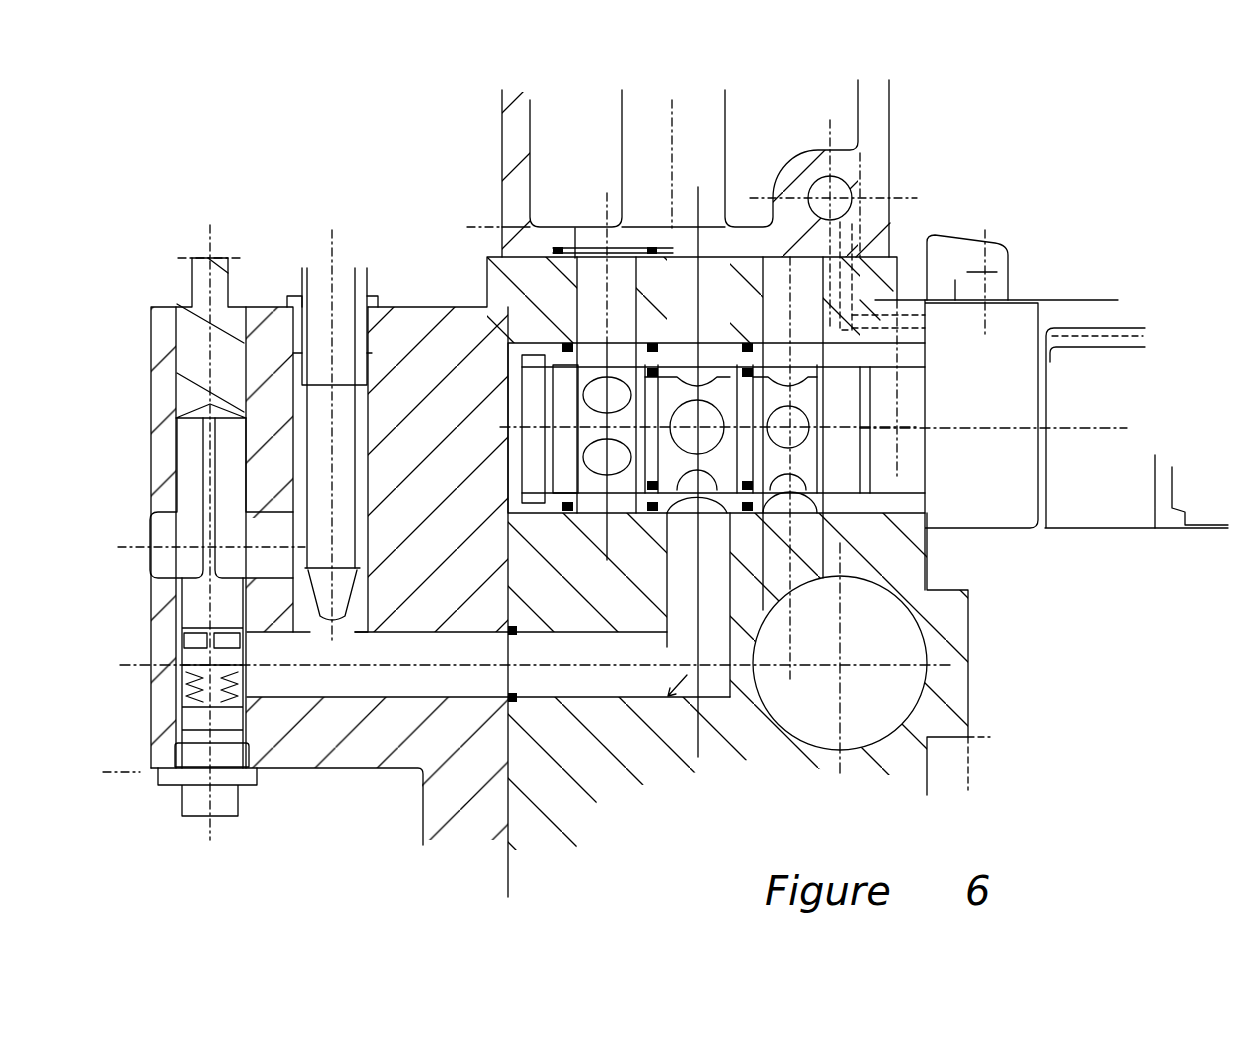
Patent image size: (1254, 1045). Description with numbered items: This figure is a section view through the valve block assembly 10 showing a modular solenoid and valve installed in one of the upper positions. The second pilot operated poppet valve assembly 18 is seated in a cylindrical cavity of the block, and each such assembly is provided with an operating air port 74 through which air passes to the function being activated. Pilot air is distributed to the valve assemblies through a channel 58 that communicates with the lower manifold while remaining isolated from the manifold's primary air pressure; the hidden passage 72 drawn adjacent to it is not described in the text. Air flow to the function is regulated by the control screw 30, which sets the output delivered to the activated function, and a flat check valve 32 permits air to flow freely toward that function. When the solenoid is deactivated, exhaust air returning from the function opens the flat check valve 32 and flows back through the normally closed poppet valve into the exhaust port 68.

The valve block assembly 10 is at (378, 142).
The second pilot operated poppet valve assembly 18 is at (927, 533).
The control screw 30 is at (363, 280).
The flat check valve 32 is at (233, 288).
The channel 58 is at (847, 177).
The exhaust port 68 is at (923, 635).
The hidden passage 72 is at (853, 240).
The operating air port 74 is at (820, 547).